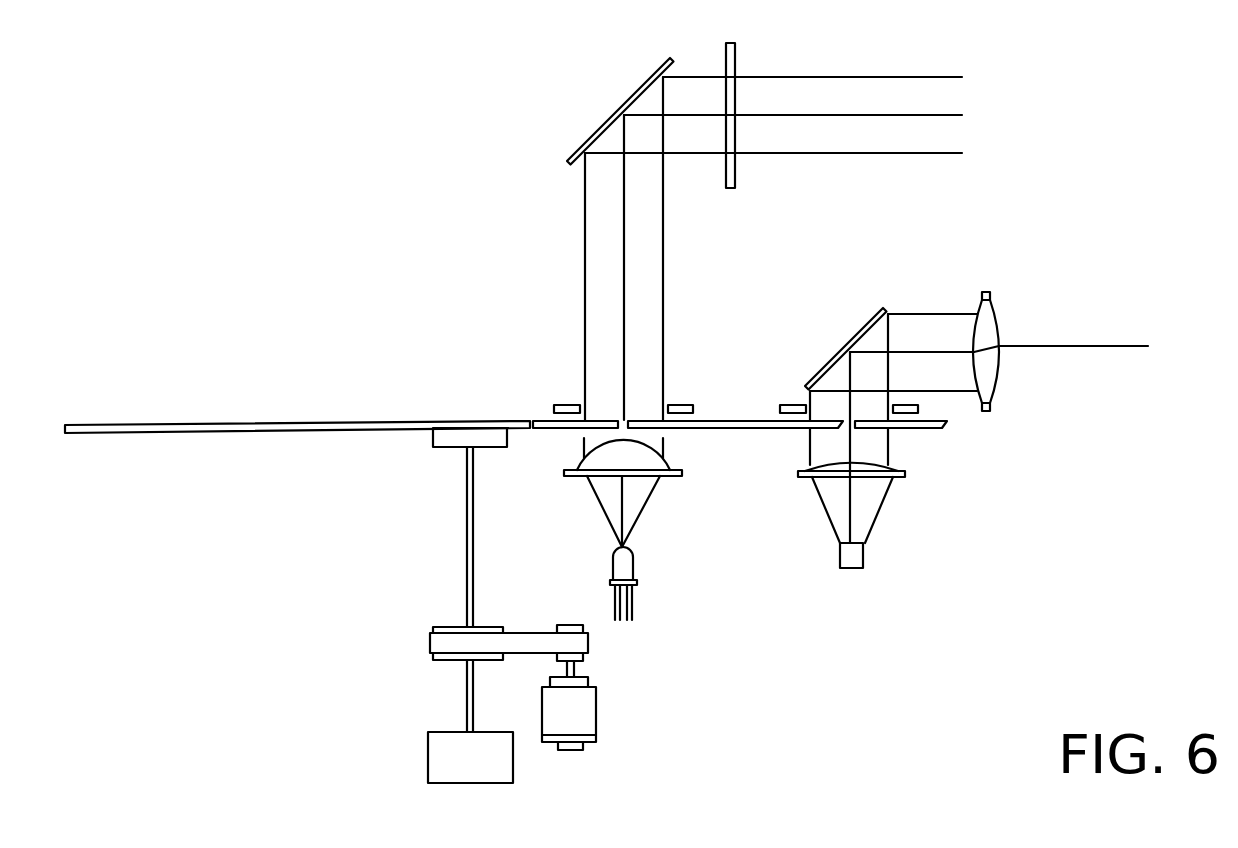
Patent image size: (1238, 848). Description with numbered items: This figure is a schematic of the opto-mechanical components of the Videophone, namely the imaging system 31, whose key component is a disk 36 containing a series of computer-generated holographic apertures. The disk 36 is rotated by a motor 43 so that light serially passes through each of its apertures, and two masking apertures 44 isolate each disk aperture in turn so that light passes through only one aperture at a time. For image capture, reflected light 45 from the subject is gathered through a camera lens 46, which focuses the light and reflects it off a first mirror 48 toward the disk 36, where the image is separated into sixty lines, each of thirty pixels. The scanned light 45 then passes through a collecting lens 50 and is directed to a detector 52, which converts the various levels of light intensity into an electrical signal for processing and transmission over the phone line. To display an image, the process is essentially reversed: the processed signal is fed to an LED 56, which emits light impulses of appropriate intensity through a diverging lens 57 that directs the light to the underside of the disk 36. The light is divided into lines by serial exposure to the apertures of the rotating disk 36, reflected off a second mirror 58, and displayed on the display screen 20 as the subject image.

The display screen 20 is at (735, 95).
The second mirror 58 is at (633, 92).
The first mirror 48 is at (863, 327).
The camera lens 46 is at (998, 298).
The reflected light 45 is at (1073, 342).
The masking apertures 44 is at (577, 403).
The disk 36 is at (223, 423).
The imaging system 31 is at (412, 512).
The motor 43 is at (575, 713).
The diverging lens 57 is at (640, 465).
The LED 56 is at (625, 567).
The collecting lens 50 is at (893, 463).
The detector 52 is at (852, 558).